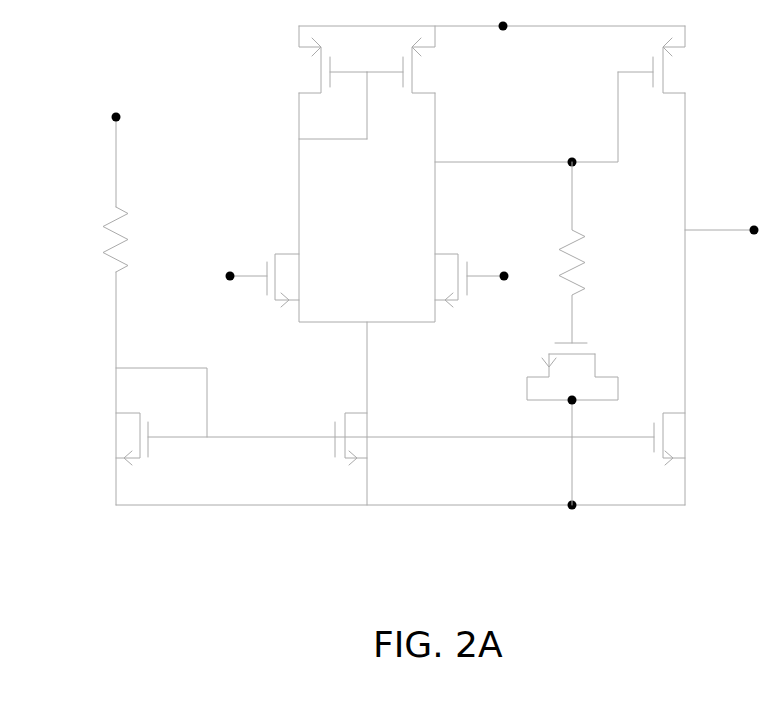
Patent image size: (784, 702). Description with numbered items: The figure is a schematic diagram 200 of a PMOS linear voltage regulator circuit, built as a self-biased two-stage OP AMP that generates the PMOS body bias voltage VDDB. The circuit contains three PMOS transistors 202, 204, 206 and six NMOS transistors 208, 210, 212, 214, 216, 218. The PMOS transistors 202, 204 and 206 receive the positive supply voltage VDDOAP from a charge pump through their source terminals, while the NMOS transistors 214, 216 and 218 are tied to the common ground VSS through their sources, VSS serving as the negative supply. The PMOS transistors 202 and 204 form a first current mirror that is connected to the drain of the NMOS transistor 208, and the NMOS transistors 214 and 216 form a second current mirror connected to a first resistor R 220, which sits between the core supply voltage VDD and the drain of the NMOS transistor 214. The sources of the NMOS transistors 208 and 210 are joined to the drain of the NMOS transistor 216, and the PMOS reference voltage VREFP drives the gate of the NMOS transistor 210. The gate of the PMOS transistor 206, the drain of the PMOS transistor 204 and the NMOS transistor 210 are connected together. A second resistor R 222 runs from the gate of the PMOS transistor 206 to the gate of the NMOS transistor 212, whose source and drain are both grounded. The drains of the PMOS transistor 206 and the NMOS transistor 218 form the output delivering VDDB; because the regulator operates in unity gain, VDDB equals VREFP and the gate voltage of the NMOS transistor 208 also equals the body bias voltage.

The schematic diagram 200 is at (632, 573).
The PMOS transistor 202 is at (305, 59).
The PMOS transistor 204 is at (430, 59).
The PMOS transistor 206 is at (681, 59).
The NMOS transistor 208 is at (242, 272).
The NMOS transistor 210 is at (496, 272).
The NMOS transistor 212 is at (543, 374).
The NMOS transistor 214 is at (157, 452).
The NMOS transistor 216 is at (325, 452).
The NMOS transistor 218 is at (699, 439).
The first resistor 220 is at (91, 239).
The second resistor 222 is at (597, 252).